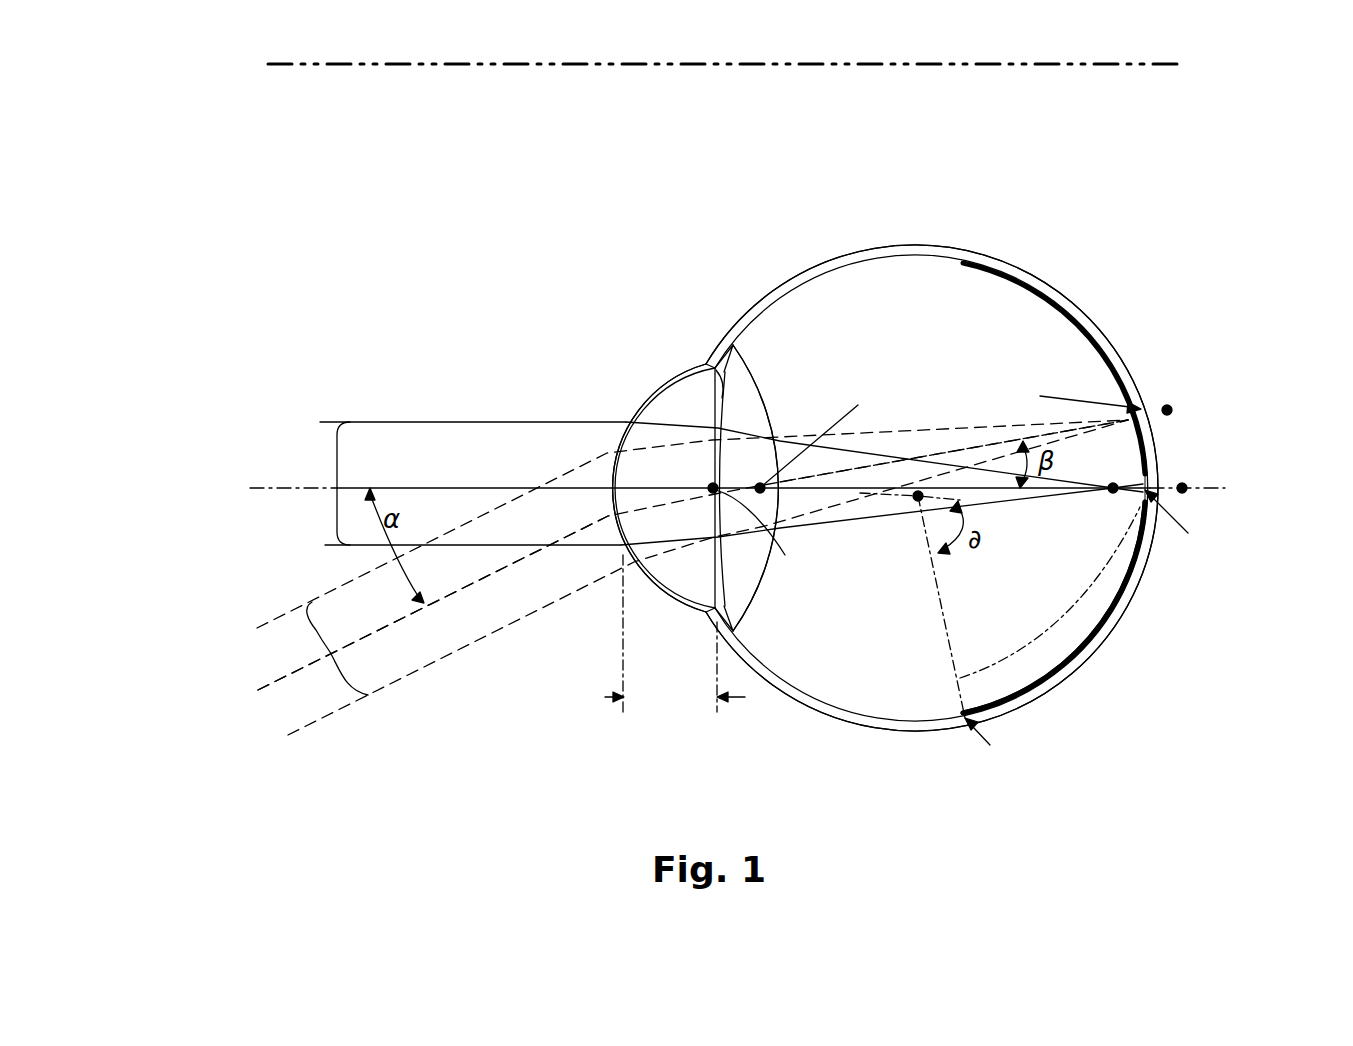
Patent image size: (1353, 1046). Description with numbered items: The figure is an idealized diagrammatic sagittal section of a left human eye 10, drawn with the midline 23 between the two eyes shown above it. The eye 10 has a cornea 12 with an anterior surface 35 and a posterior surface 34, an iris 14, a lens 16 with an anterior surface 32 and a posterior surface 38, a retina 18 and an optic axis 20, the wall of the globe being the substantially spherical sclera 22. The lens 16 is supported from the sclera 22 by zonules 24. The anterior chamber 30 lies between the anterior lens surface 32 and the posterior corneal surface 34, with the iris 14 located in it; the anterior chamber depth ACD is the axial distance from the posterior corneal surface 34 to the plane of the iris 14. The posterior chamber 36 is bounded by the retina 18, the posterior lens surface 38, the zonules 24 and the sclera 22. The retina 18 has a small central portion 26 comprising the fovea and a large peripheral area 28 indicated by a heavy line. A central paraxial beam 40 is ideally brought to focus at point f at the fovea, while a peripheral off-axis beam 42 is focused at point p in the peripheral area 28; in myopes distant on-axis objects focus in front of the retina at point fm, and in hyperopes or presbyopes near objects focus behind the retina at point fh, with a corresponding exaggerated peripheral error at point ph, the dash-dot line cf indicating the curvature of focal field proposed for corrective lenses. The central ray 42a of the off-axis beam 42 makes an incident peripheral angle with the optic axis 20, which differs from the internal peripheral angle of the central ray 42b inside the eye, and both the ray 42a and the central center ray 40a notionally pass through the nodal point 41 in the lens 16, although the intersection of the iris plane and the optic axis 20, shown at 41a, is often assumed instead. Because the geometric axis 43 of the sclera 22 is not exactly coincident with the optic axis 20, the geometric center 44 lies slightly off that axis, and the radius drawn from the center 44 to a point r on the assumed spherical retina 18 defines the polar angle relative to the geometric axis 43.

The eye 10 is at (793, 262).
The cornea 12 is at (630, 420).
The iris 14 is at (721, 399).
The lens 16 is at (736, 570).
The retina 18 is at (1116, 607).
The optic axis 20 is at (262, 487).
The sclera 22 is at (930, 247).
The midline 23 is at (374, 64).
The zonules 24 is at (727, 355).
The central portion 26 is at (1147, 482).
The peripheral area 28 is at (1038, 297).
The anterior chamber 30 is at (693, 477).
The anterior surface of lens 32 is at (716, 524).
The posterior surface of cornea 34 is at (655, 398).
The anterior surface of cornea 35 is at (655, 386).
The posterior chamber 36 is at (917, 320).
The posterior surface of lens 38 is at (766, 421).
The central or paraxial beam 40 is at (331, 464).
The central center ray 40a is at (482, 487).
The nodal point 41 is at (823, 433).
The nodal point at iris plane 41a is at (785, 555).
The peripheral or off-axis beam 42 is at (321, 642).
The central ray of off-axis beam 42a is at (490, 576).
The central ray inside the eye 42b is at (967, 450).
The geometric axis 43 is at (893, 496).
The geometric center 44 is at (917, 501).
The anterior chamber depth ACD is at (675, 633).
The myopic focal point fm is at (1114, 483).
The hyperopic focal point fh is at (1187, 486).
The peripheral hyperopic focal point ph is at (1170, 408).
The peripheral focal point p is at (1079, 395).
The foveal focal point f is at (1175, 525).
The curvature of focal field cf is at (1062, 647).
The retinal point r is at (985, 744).